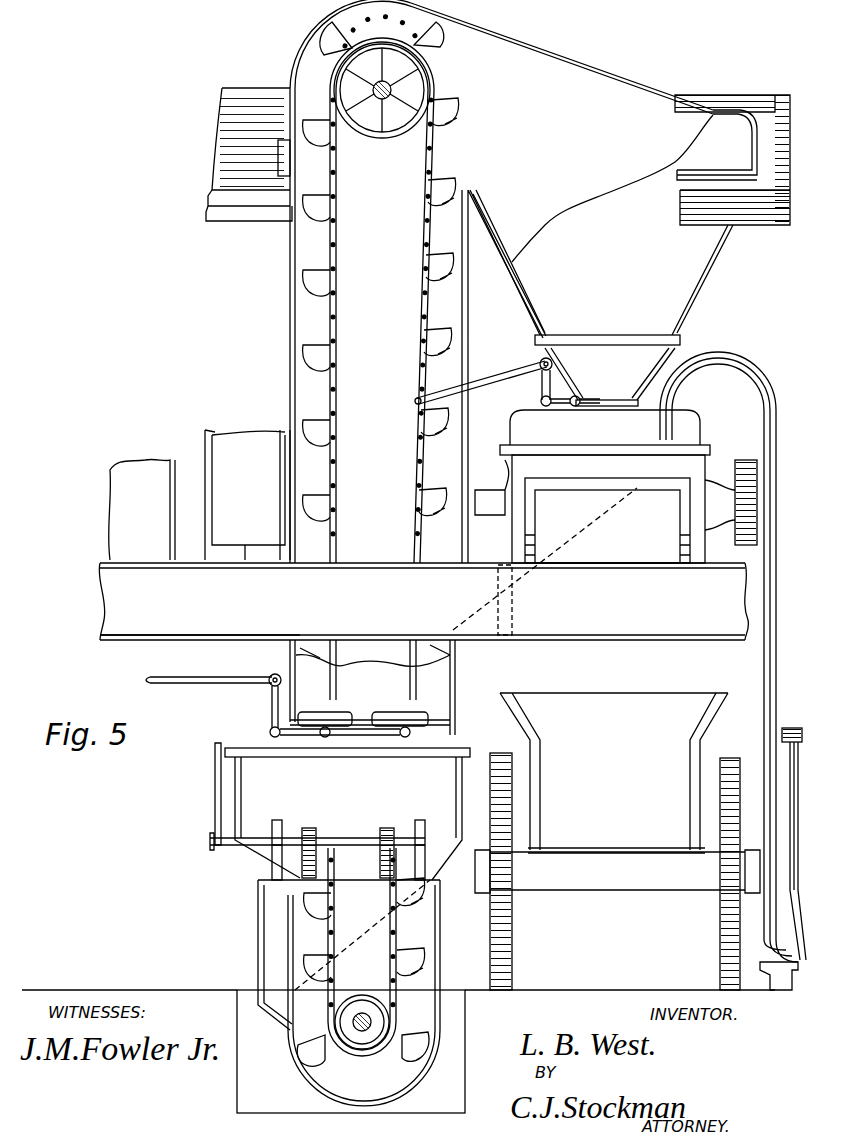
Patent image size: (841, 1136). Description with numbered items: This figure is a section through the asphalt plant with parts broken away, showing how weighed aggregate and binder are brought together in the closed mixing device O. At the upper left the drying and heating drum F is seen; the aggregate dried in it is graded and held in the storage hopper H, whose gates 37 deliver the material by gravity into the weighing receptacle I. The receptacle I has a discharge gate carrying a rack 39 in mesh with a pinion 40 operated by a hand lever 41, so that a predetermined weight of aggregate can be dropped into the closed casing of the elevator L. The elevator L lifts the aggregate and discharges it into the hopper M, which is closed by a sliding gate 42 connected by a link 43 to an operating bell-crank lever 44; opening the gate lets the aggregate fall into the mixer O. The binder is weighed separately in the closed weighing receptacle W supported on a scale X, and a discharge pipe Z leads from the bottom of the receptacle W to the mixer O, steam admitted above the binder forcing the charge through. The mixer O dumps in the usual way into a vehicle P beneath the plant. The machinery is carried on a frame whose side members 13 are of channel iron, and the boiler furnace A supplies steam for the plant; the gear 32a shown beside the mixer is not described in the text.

The elevator L is at (430, 142).
The drum F is at (255, 222).
The hopper M is at (630, 220).
The sliding gate 42 is at (605, 400).
The operating bell-crank lever 44 is at (512, 382).
The link 43 is at (540, 410).
The closed mixing device O is at (600, 414).
The knob 32a is at (745, 460).
The boiler furnace A is at (423, 601).
The side members 13 is at (150, 641).
The discharge pipe Z is at (729, 657).
The closed weighing receptacle W is at (790, 728).
The scale X is at (779, 976).
The storage hopper H is at (298, 705).
The gates 37 is at (400, 722).
The receptacle I is at (347, 814).
The hand lever 41 is at (215, 808).
The pinion 40 is at (320, 820).
The rack 39 is at (380, 865).
The vehicle P is at (617, 841).